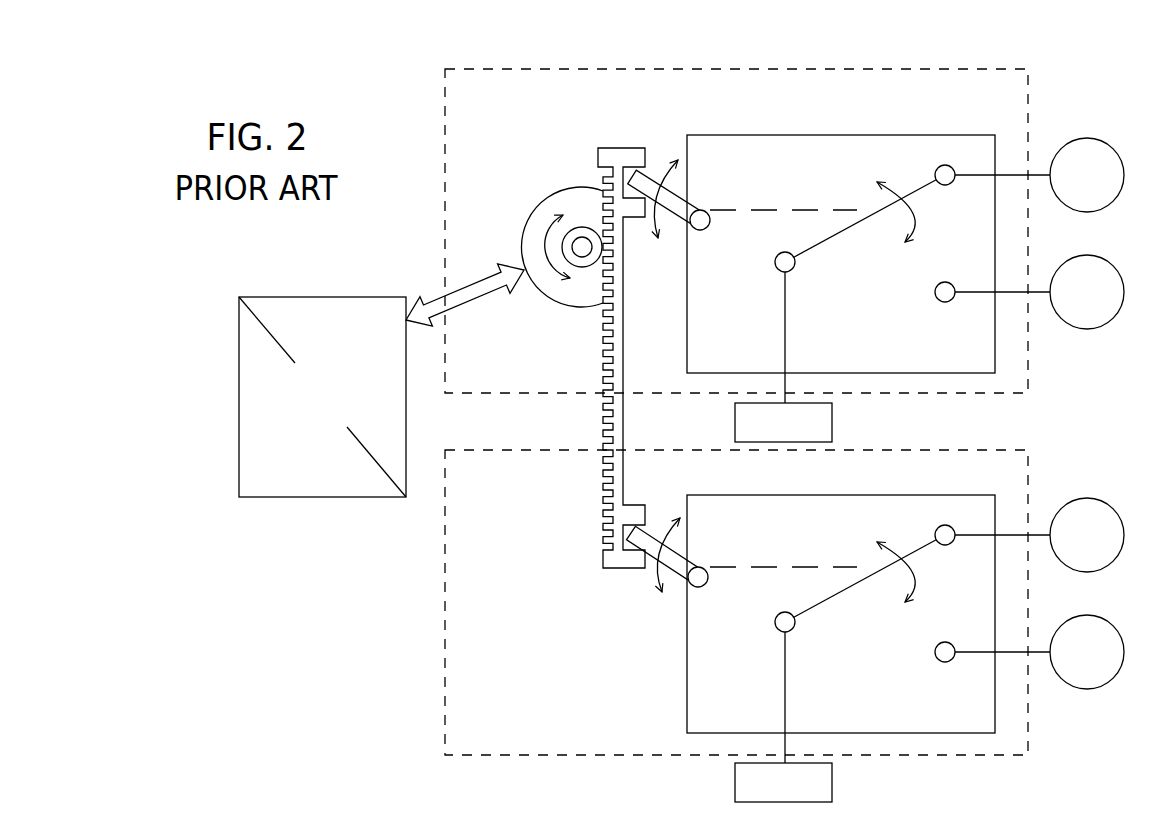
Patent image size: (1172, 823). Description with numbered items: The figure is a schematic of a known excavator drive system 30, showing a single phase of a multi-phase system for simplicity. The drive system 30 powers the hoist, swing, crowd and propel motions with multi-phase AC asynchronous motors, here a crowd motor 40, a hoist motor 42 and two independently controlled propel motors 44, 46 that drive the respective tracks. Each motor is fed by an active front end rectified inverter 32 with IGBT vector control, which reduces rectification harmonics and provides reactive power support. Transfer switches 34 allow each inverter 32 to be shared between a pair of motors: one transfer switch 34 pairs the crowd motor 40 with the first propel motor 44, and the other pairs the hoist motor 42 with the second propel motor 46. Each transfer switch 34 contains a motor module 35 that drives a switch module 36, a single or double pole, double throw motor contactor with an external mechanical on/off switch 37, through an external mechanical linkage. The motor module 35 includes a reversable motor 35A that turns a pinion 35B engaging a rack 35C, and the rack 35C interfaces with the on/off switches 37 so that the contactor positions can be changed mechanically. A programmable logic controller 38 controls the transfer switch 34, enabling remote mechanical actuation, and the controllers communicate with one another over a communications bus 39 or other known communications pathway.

The drive system 30 is at (387, 652).
The inverter 32 is at (833, 421).
The transfer switch 34 is at (758, 62).
The motor module 35 is at (570, 326).
The reversable motor 35A is at (570, 296).
The pinion 35B is at (583, 230).
The rack 35C is at (630, 148).
The switch module 36 is at (842, 145).
The on/off switch 37 is at (677, 213).
The programmable logic controller 38 is at (243, 433).
The communications bus 39 is at (488, 296).
The crowd motion motor 40 is at (1109, 150).
The hoist motion motor 42 is at (1112, 512).
The propel 1 motion motor 44 is at (1100, 318).
The propel 2 motion motor 46 is at (1100, 678).